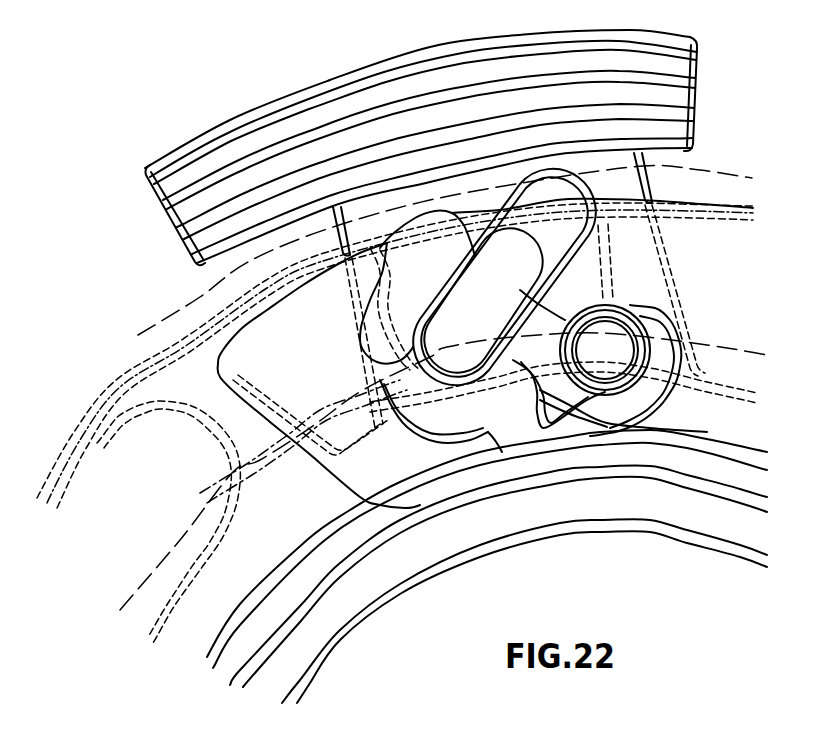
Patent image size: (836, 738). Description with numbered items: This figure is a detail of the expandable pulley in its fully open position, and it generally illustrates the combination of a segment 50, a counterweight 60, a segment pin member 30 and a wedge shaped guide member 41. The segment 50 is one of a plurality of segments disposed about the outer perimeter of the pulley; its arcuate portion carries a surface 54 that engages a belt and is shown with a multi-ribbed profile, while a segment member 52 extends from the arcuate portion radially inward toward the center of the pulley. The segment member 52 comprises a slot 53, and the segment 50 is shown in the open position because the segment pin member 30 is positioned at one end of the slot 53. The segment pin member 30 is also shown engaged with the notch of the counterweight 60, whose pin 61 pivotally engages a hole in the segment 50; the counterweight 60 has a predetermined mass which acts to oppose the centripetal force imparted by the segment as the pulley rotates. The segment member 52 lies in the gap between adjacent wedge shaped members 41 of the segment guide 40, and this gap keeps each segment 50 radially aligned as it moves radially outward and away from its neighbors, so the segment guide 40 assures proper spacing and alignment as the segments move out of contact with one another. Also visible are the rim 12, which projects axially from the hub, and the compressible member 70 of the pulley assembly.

The rim 12 is at (662, 517).
The segment pin member 30 is at (507, 305).
The segment guide 40 is at (170, 393).
The wedge shaped member 41 is at (770, 312).
The segment 50 is at (695, 105).
The segment member 52 is at (612, 183).
The slot 53 is at (552, 245).
The surface 54 is at (213, 127).
The counterweight 60 is at (304, 355).
The pin 61 is at (662, 393).
The compressible member 70 is at (347, 538).